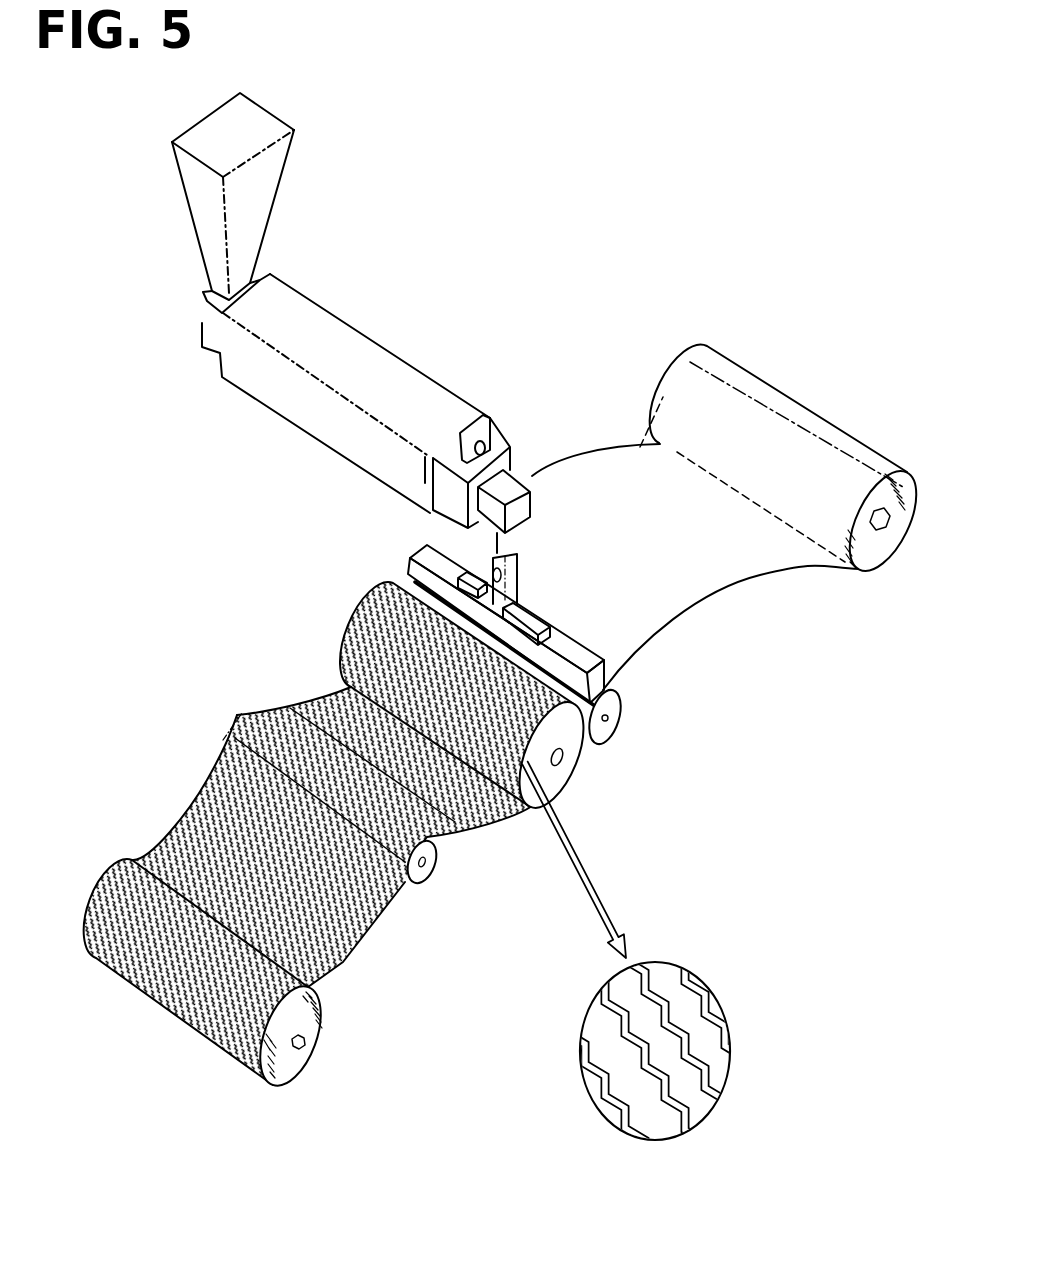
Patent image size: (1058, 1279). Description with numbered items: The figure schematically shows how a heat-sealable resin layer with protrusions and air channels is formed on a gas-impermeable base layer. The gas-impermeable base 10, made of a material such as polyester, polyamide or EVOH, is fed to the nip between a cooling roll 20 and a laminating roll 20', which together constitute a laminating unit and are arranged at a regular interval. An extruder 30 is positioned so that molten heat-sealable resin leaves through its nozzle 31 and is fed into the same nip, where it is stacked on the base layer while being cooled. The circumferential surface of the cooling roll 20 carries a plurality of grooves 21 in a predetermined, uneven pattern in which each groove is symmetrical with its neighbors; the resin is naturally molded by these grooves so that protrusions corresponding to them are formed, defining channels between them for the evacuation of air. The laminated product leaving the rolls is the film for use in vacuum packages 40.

The gas-impermeable base 10 is at (562, 480).
The cooling roll 20 is at (493, 699).
The laminating roll 20' is at (638, 722).
The grooves 21 is at (717, 1013).
The extruder 30 is at (307, 415).
The nozzle 31 is at (595, 682).
The film for use in vacuum packages 40 is at (343, 962).